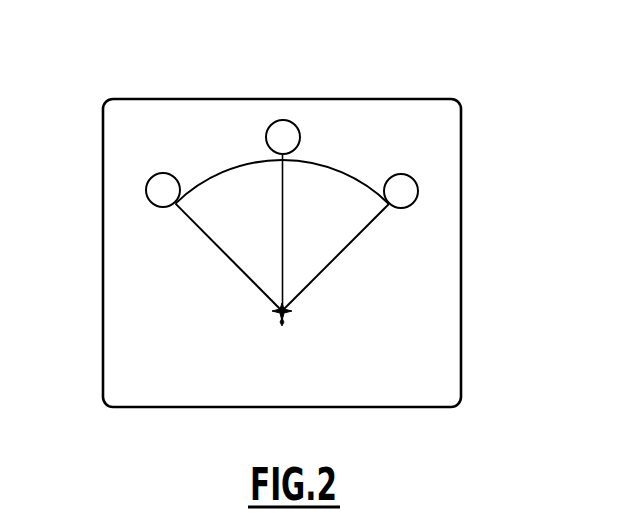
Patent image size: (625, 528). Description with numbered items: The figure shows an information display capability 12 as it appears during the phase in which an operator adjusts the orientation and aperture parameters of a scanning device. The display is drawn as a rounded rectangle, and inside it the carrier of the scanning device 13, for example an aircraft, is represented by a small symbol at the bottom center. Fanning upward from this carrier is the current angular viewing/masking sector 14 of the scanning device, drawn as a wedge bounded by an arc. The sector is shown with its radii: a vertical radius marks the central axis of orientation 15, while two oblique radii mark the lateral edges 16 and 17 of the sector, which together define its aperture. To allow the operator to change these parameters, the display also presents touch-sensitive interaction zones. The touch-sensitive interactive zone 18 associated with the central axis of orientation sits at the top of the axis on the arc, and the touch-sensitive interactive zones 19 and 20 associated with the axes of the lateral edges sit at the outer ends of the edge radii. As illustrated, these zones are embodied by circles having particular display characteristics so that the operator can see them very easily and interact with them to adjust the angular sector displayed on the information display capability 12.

The information display capability 12 is at (471, 287).
The carrier of the scanning device 13 is at (275, 318).
The angular viewing/masking sector 14 is at (356, 176).
The central axis of orientation 15 is at (285, 189).
The lateral edge 16 is at (361, 242).
The lateral edge 17 is at (208, 251).
The touch-sensitive interactive zone 18 is at (283, 118).
The touch-sensitive interactive zone 19 is at (423, 189).
The touch-sensitive interactive zone 20 is at (135, 191).